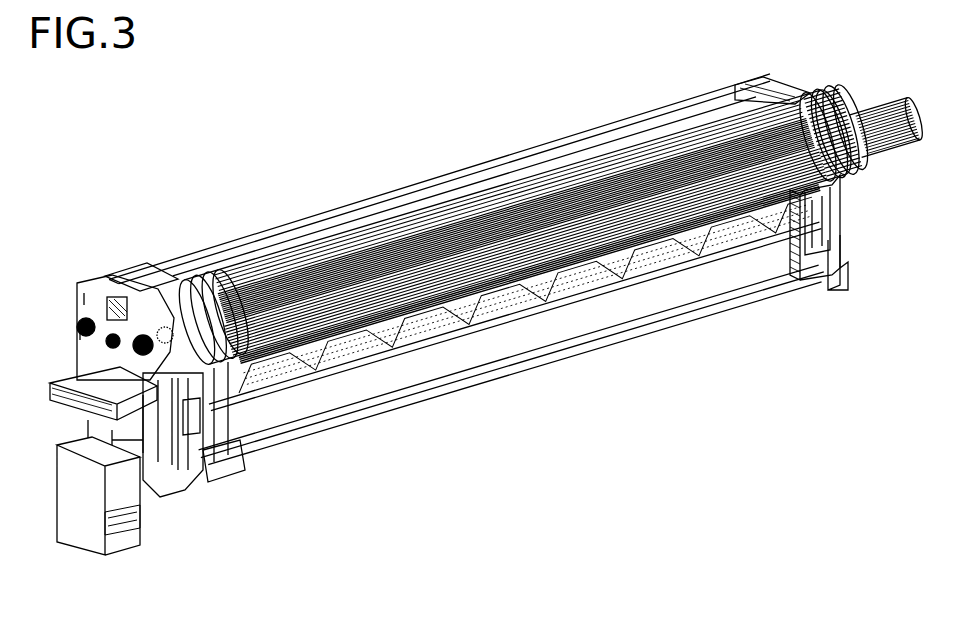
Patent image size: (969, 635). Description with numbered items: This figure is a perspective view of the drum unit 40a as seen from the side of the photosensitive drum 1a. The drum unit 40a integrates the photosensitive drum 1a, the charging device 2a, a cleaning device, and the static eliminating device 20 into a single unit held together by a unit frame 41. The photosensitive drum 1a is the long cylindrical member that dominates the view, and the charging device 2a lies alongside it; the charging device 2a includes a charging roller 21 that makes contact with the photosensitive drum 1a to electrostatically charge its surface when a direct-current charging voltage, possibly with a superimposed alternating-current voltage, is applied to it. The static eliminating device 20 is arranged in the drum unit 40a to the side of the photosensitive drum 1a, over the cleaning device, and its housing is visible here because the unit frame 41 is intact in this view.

The drum unit 40a is at (432, 149).
The static eliminating device 20 is at (442, 184).
The unit frame 41 is at (82, 308).
The photosensitive drum 1a is at (550, 216).
The charging roller 21 is at (528, 289).
The charging device 2a is at (511, 344).